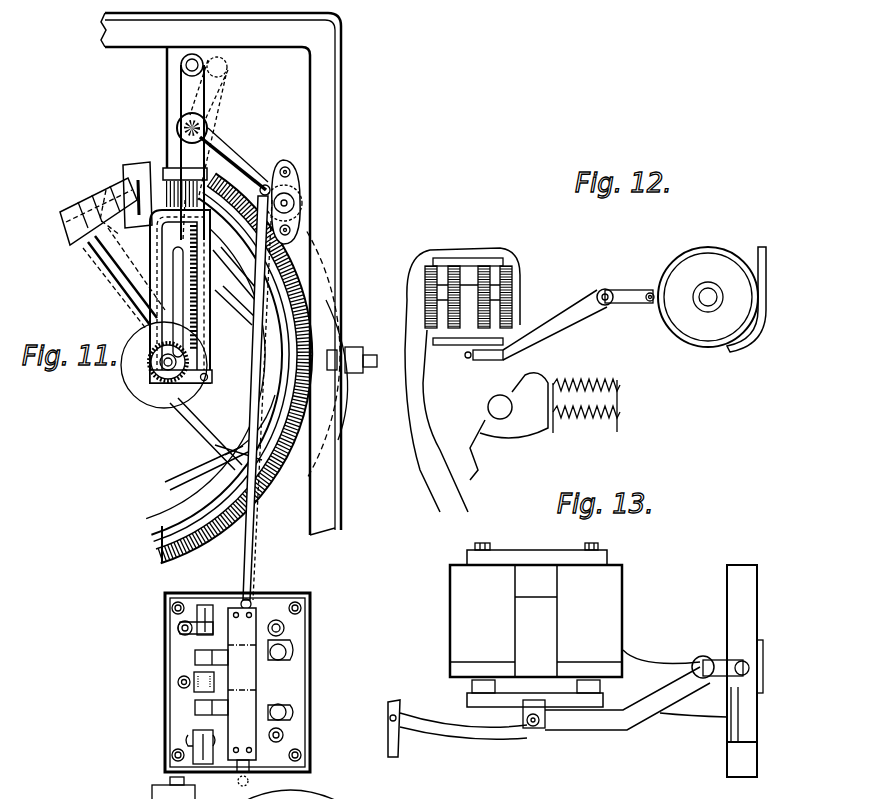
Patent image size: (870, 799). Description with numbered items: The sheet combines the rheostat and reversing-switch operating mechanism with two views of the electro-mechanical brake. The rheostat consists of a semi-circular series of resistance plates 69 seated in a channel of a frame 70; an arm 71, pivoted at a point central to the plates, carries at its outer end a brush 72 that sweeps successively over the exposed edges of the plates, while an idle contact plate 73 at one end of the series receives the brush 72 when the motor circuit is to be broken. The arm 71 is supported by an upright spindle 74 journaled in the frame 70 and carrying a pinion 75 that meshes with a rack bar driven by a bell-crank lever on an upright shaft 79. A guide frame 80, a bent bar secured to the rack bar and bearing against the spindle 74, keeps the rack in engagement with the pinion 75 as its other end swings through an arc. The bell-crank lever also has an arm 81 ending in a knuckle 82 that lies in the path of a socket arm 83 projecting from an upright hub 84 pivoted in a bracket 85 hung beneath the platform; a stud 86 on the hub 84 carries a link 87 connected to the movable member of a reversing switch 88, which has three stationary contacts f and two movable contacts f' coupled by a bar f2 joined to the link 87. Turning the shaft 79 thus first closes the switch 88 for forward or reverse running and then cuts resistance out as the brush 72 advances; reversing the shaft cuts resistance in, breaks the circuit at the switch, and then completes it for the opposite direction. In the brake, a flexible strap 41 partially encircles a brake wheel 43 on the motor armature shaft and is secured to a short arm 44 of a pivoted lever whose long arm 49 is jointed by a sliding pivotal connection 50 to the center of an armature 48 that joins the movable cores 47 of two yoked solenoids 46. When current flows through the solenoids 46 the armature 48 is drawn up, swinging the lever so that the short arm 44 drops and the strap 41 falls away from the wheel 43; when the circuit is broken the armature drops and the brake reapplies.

In FIG. 11, the resistance plates 69 is at (300, 265).
In FIG. 11, the frame 70 is at (255, 300).
In FIG. 11, the arm 71 is at (122, 278).
In FIG. 11, the brush 72 is at (102, 255).
In FIG. 11, the idle contact plate 73 is at (138, 150).
In FIG. 11, the spindle 74 is at (158, 396).
In FIG. 11, the pinion 75 is at (150, 372).
In FIG. 11, the shaft 79 is at (207, 128).
In FIG. 11, the guide frame 80 is at (152, 320).
In FIG. 11, the arm 81 is at (245, 168).
In FIG. 11, the knuckle 82 is at (290, 168).
In FIG. 11, the socket arm 83 is at (268, 180).
In FIG. 11, the hub 84 is at (300, 210).
In FIG. 11, the bracket 85 is at (292, 178).
In FIG. 11, the stud 86 is at (294, 200).
In FIG. 11, the link 87 is at (261, 402).
In FIG. 11, the reversing switch 88 is at (286, 681).
In FIG. 11, the stationary contacts f is at (172, 689).
In FIG. 11, the movable contacts f' is at (176, 692).
In FIG. 11, the bar f2 is at (242, 697).
In FIG. 12, the flexible strap 41 is at (748, 345).
In FIG. 13, the flexible strap 41 is at (757, 752).
In FIG. 12, the brake wheel 43 is at (708, 297).
In FIG. 13, the brake wheel 43 is at (757, 612).
In FIG. 13, the short arm 44 is at (703, 656).
In FIG. 12, the solenoids 46 is at (512, 295).
In FIG. 13, the solenoids 46 is at (536, 610).
In FIG. 12, the movable cores 47 is at (443, 333).
In FIG. 13, the movable cores 47 is at (468, 688).
In FIG. 13, the armature 48 is at (510, 722).
In FIG. 12, the long arm 49 is at (495, 355).
In FIG. 13, the long arm 49 is at (600, 732).
In FIG. 13, the sliding pivotal connection 50 is at (533, 730).